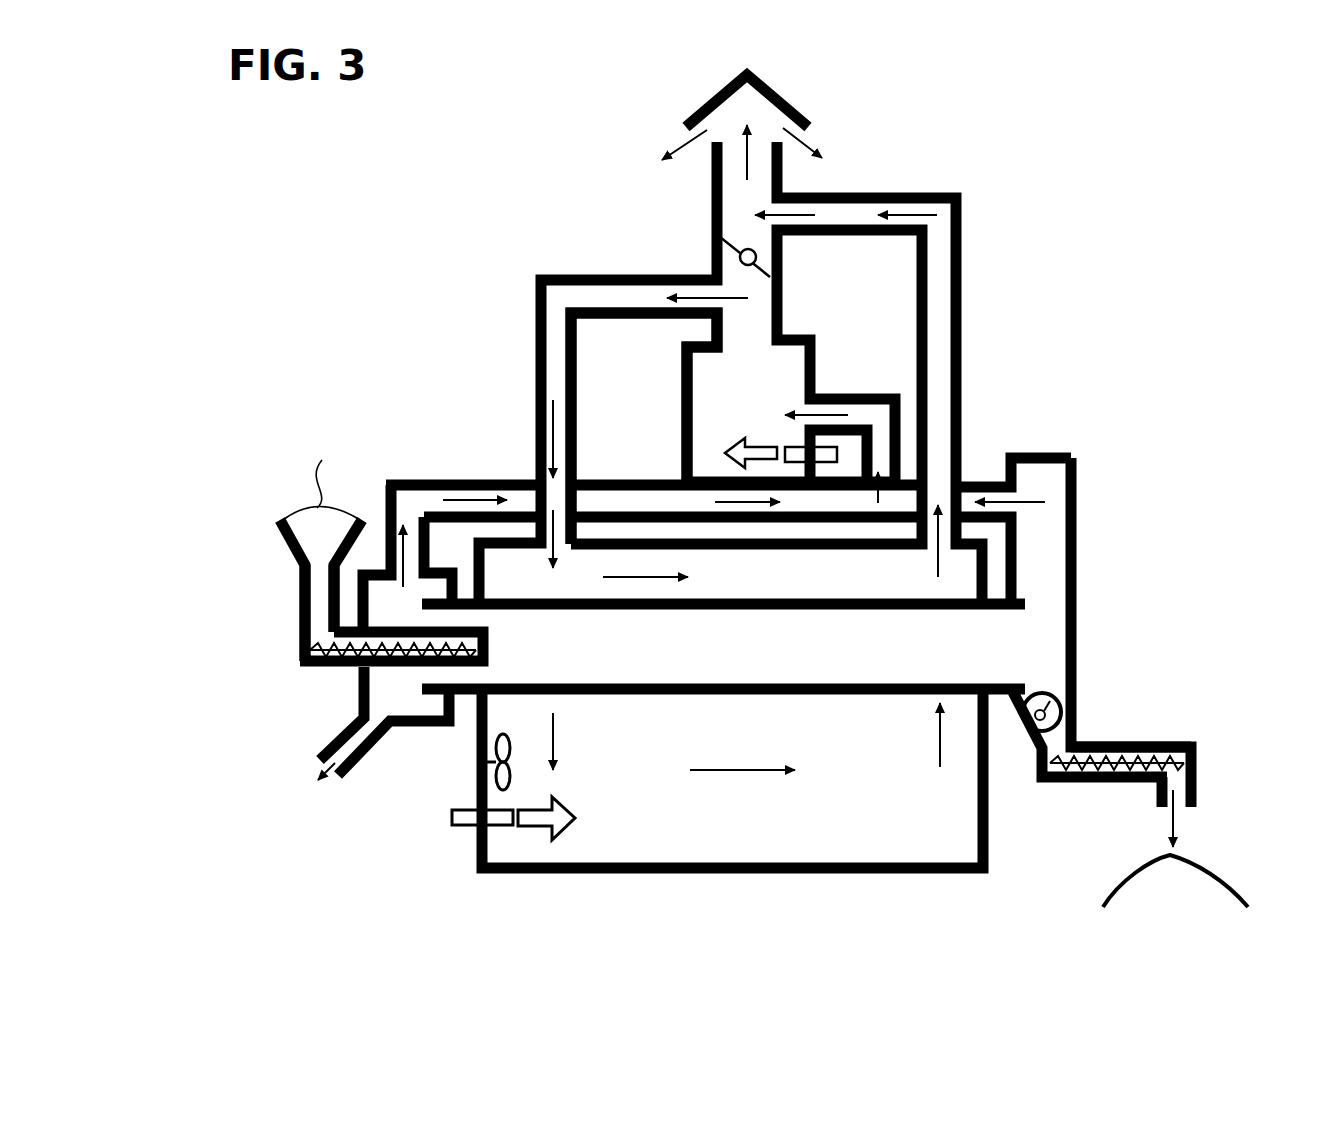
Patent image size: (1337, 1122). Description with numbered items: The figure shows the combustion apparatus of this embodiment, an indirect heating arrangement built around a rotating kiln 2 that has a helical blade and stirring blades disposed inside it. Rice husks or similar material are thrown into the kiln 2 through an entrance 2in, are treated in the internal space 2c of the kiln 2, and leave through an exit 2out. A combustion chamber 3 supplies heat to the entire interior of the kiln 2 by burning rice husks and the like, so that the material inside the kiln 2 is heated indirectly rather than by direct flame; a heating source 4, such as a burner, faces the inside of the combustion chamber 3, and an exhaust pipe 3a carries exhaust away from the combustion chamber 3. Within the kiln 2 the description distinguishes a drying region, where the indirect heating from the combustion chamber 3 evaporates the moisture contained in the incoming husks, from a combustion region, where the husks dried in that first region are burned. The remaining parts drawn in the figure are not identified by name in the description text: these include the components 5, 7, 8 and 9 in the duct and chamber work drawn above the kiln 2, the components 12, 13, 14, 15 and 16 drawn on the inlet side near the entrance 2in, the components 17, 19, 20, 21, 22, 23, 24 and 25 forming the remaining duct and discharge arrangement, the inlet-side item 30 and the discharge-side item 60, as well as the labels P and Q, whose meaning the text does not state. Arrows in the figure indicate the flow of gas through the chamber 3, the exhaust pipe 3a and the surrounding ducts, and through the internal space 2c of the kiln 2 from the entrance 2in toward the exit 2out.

The rotating kiln 2 is at (1002, 697).
The internal space 2c is at (697, 741).
The entrance 2in is at (408, 883).
The exit 2out is at (1140, 620).
The combustion chamber 3 is at (765, 875).
The exhaust pipe 3a is at (962, 350).
The heating source 4 is at (457, 827).
The exhaust pipe 5 is at (359, 695).
The combustion chamber 7 is at (685, 395).
The burner 8 is at (681, 428).
The sensor box 9 is at (837, 453).
The discharge port 12 is at (370, 755).
The fan 13 is at (495, 778).
The hopper 14 is at (293, 563).
The feed chute 15 is at (300, 607).
The feed screw 16 is at (333, 647).
The discharge screw 17 is at (1090, 785).
The return duct 19 is at (1075, 540).
The rotary valve 20 is at (1067, 710).
The discharge outlet 21 is at (1168, 742).
The supply duct 22 is at (420, 470).
The damper valve 23 is at (705, 225).
The hot air passage 24 is at (535, 415).
The circulation duct 25 is at (1100, 492).
The feeder 30 is at (268, 480).
The discharge unit 60 is at (1242, 728).
The raw material P is at (318, 438).
The dried product Q is at (1213, 873).